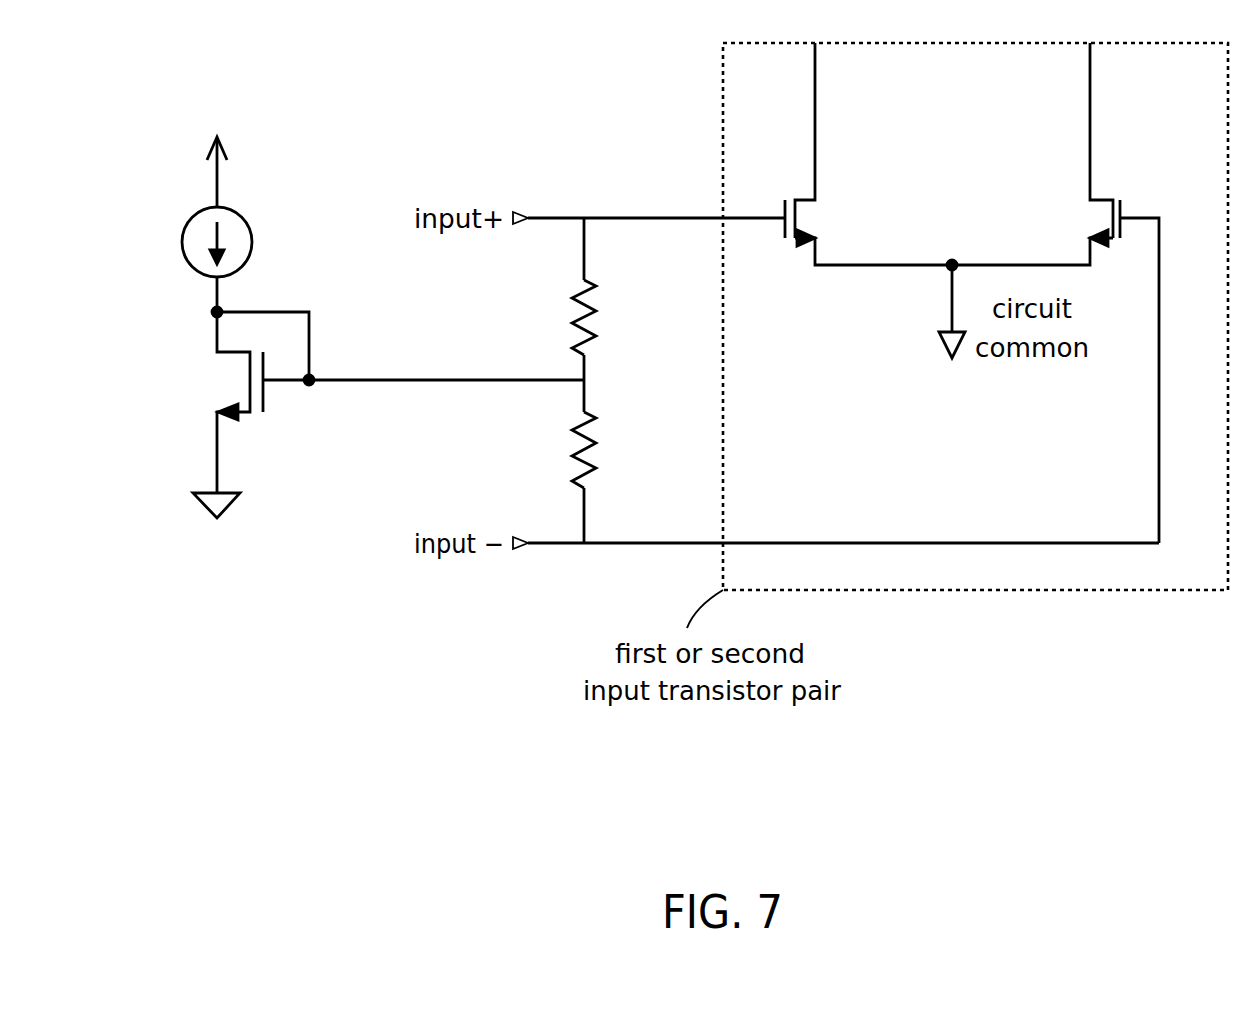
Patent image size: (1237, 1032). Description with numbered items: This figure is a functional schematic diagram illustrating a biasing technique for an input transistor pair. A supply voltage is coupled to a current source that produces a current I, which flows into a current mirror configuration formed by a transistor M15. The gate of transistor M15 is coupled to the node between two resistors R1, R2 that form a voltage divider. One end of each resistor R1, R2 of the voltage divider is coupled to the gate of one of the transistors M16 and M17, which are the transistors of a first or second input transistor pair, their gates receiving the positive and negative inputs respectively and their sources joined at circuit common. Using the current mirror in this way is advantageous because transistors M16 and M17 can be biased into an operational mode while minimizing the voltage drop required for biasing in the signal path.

The current I is at (228, 207).
The transistor M15 is at (237, 412).
The transistor M16 is at (868, 154).
The transistor M17 is at (1055, 293).
The resistor R1 is at (617, 299).
The resistor R2 is at (616, 461).